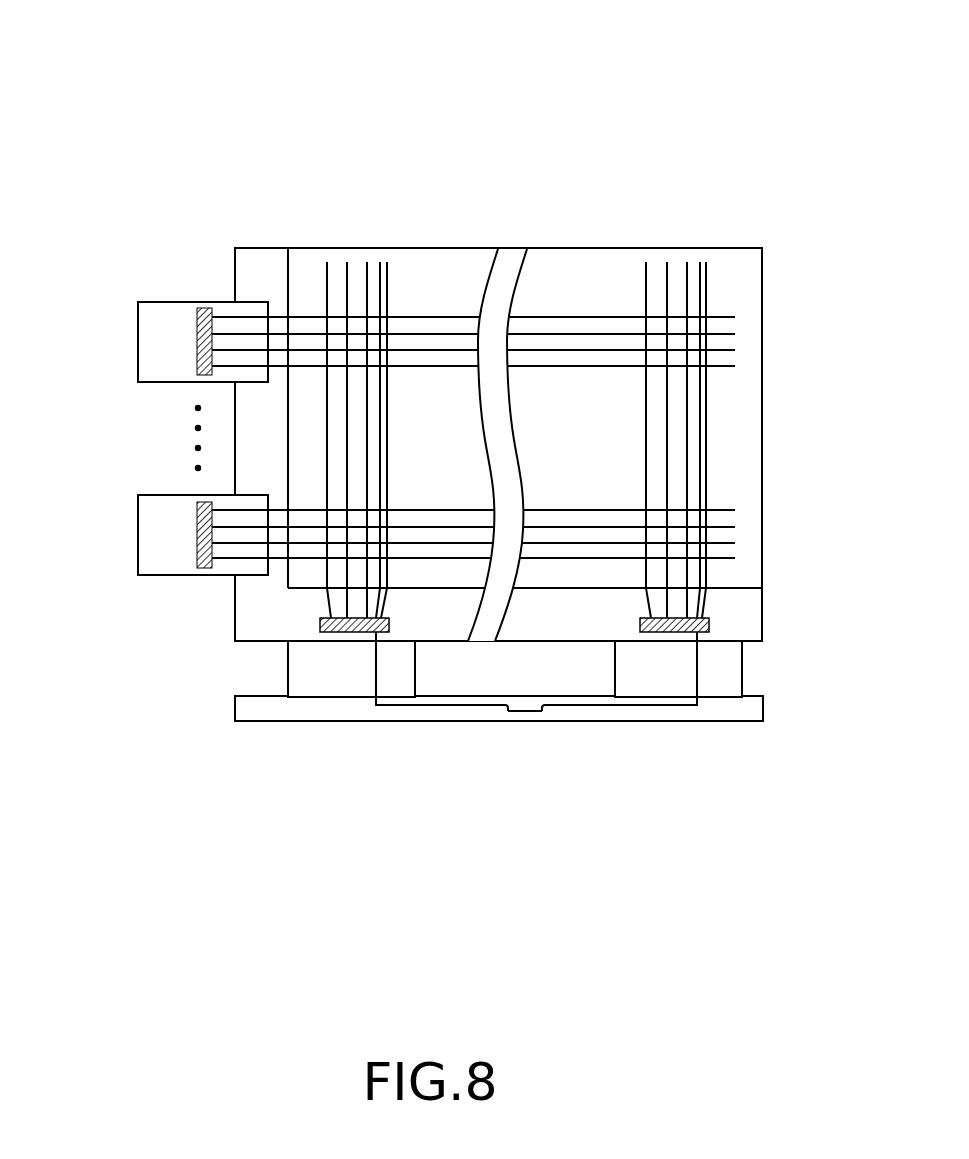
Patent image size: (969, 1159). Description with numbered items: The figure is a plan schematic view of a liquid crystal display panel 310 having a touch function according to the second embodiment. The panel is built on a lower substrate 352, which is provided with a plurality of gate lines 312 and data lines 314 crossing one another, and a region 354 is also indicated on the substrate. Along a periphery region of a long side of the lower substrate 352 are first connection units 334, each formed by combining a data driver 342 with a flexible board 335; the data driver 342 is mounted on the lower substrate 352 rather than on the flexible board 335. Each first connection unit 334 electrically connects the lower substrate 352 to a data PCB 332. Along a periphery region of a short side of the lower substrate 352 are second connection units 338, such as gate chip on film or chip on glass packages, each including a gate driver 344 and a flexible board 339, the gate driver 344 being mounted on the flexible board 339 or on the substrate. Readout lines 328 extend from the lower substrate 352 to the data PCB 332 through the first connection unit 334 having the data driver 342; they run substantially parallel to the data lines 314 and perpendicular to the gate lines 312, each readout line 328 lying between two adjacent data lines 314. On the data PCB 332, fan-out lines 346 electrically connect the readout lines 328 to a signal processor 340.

The liquid crystal display panel 310 is at (260, 105).
The gate lines 312 is at (718, 367).
The data lines 314 is at (327, 277).
The readout lines 328 is at (383, 273).
The data PCB 332 is at (253, 706).
The first connection unit 334 is at (250, 828).
The flexible board 335 is at (320, 667).
The second connection unit 338 is at (168, 548).
The flexible board 339 is at (155, 530).
The signal processor 340 is at (525, 715).
The data driver 342 is at (347, 632).
The gate driver 344 is at (207, 567).
The fan-out lines 346 is at (440, 705).
The lower substrate 352 is at (258, 267).
The active area 354 is at (300, 267).